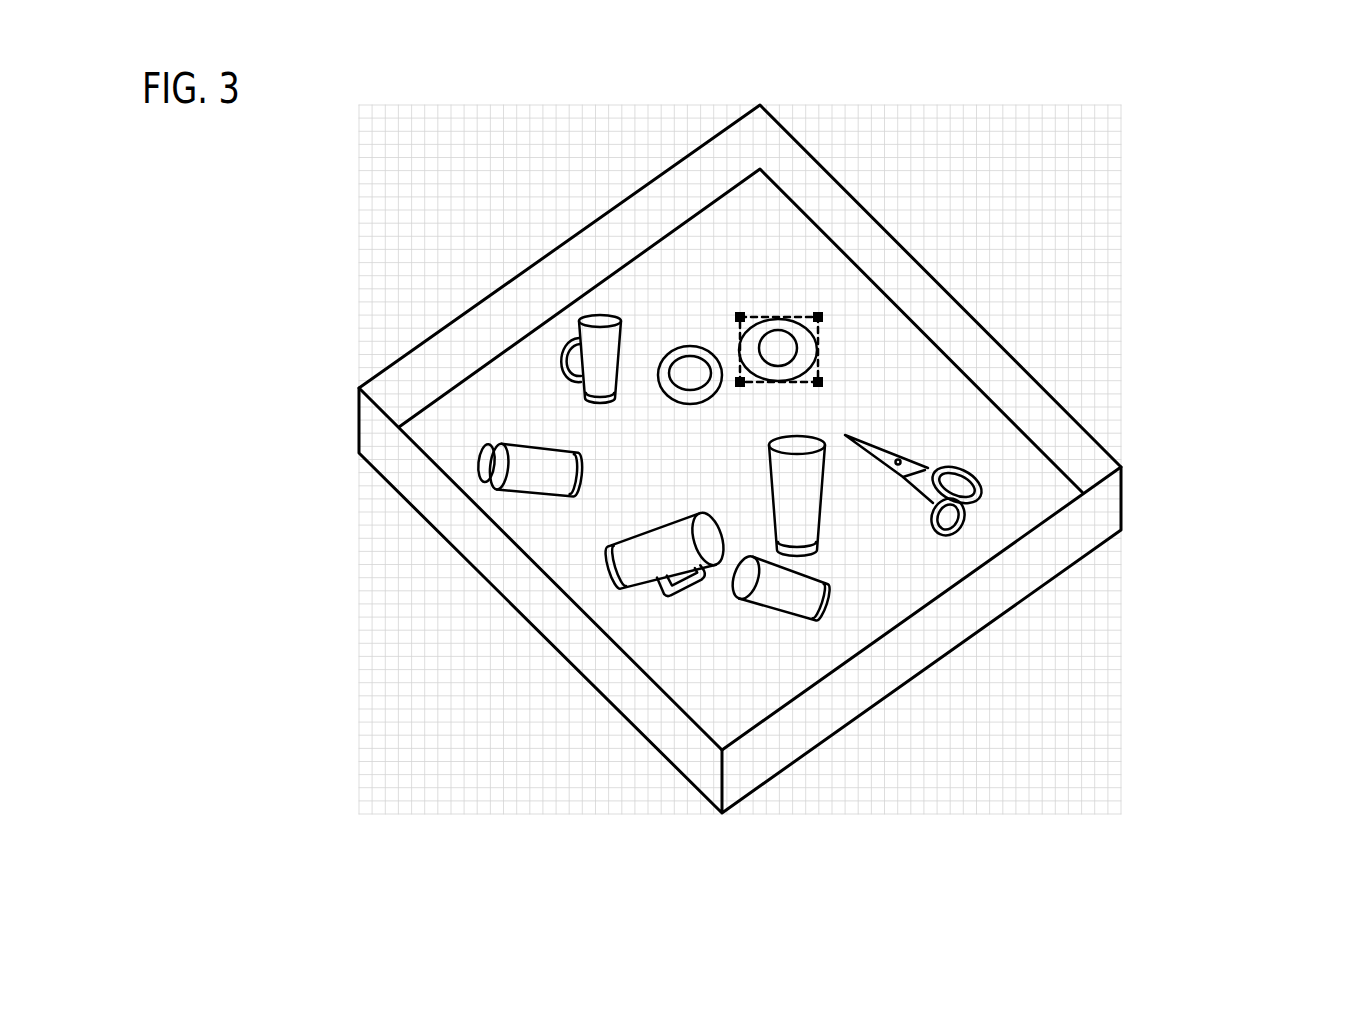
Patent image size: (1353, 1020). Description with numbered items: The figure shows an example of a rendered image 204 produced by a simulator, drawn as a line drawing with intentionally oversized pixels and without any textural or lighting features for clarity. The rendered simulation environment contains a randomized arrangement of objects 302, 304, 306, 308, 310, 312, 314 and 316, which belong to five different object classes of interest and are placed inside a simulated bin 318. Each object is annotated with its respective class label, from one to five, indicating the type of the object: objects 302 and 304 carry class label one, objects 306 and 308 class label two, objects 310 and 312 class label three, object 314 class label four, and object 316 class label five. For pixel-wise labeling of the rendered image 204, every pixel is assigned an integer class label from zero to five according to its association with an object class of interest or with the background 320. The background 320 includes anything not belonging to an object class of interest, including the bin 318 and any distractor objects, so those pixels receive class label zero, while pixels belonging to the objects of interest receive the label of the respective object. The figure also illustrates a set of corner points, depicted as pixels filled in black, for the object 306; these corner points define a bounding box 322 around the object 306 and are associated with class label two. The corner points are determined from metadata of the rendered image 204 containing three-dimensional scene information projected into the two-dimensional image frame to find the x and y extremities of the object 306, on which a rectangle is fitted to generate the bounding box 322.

The rendered image 204 is at (1247, 113).
The object 302 is at (652, 560).
The object 304 is at (596, 358).
The object 306 is at (805, 343).
The object 308 is at (689, 350).
The object 310 is at (800, 494).
The object 312 is at (780, 593).
The object 314 is at (924, 468).
The object 316 is at (537, 475).
The simulated bin 318 is at (391, 444).
The background 320 is at (658, 793).
The bounding box 322 is at (756, 313).